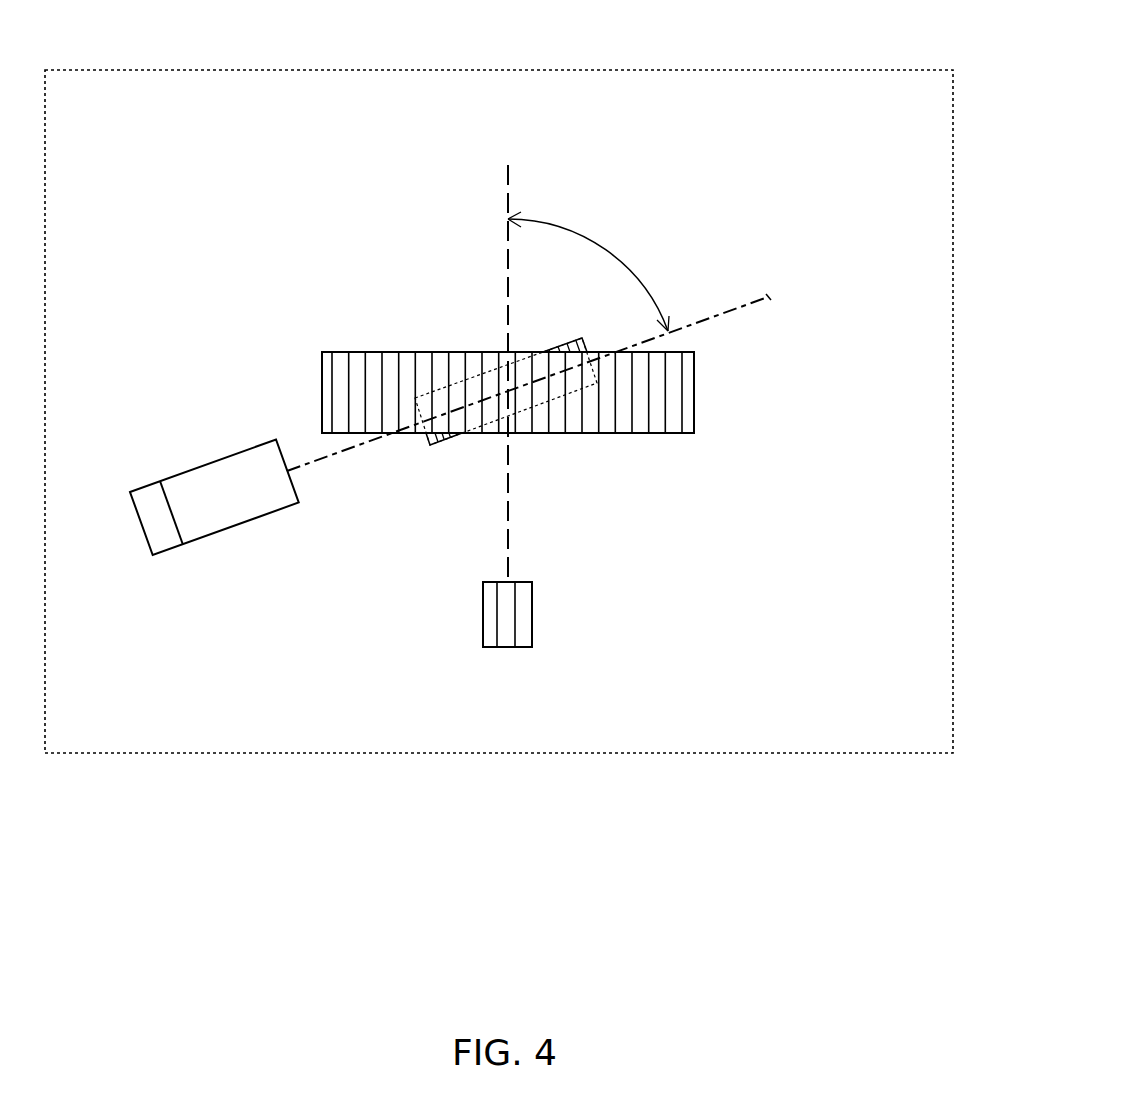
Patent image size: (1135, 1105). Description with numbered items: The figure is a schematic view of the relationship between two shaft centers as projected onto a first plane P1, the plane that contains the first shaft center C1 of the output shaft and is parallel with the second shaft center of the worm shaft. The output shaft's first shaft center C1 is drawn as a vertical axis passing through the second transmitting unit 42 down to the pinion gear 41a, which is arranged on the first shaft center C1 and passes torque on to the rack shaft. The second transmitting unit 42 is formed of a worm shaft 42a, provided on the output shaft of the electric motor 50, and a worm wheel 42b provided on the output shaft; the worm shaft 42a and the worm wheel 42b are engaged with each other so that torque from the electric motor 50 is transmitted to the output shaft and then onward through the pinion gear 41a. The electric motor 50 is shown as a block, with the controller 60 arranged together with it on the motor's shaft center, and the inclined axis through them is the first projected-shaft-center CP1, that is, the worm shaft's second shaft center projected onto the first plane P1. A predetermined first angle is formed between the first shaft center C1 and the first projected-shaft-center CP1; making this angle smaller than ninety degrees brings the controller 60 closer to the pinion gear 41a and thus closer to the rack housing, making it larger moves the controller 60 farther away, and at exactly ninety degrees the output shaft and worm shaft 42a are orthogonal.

The first plane P1 is at (781, 70).
The first shaft center C1 is at (506, 180).
The first projected-shaft-center CP1 is at (768, 297).
The second transmitting unit 42 is at (508, 459).
The worm shaft 42a is at (547, 393).
The worm wheel 42b is at (642, 422).
The pinion gear 41a is at (525, 622).
The electric motor 50 is at (223, 537).
The controller 60 is at (165, 542).